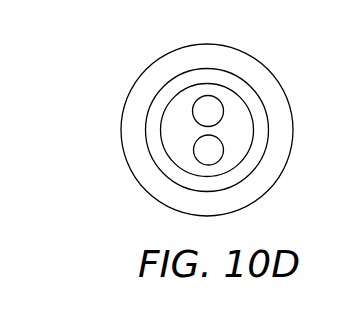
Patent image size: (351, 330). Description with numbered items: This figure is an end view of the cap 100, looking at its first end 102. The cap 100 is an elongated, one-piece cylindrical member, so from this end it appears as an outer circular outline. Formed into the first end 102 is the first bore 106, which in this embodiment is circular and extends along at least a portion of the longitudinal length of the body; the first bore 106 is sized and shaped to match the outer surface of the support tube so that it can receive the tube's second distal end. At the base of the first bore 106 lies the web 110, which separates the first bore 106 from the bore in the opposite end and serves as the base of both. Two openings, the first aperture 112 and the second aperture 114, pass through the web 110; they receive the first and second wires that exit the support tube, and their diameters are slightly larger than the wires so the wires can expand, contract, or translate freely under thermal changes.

The cap 100 is at (93, 87).
The first end 102 is at (230, 55).
The first bore 106 is at (254, 117).
The web 110 is at (167, 137).
The first aperture 112 is at (206, 100).
The second aperture 114 is at (210, 153).